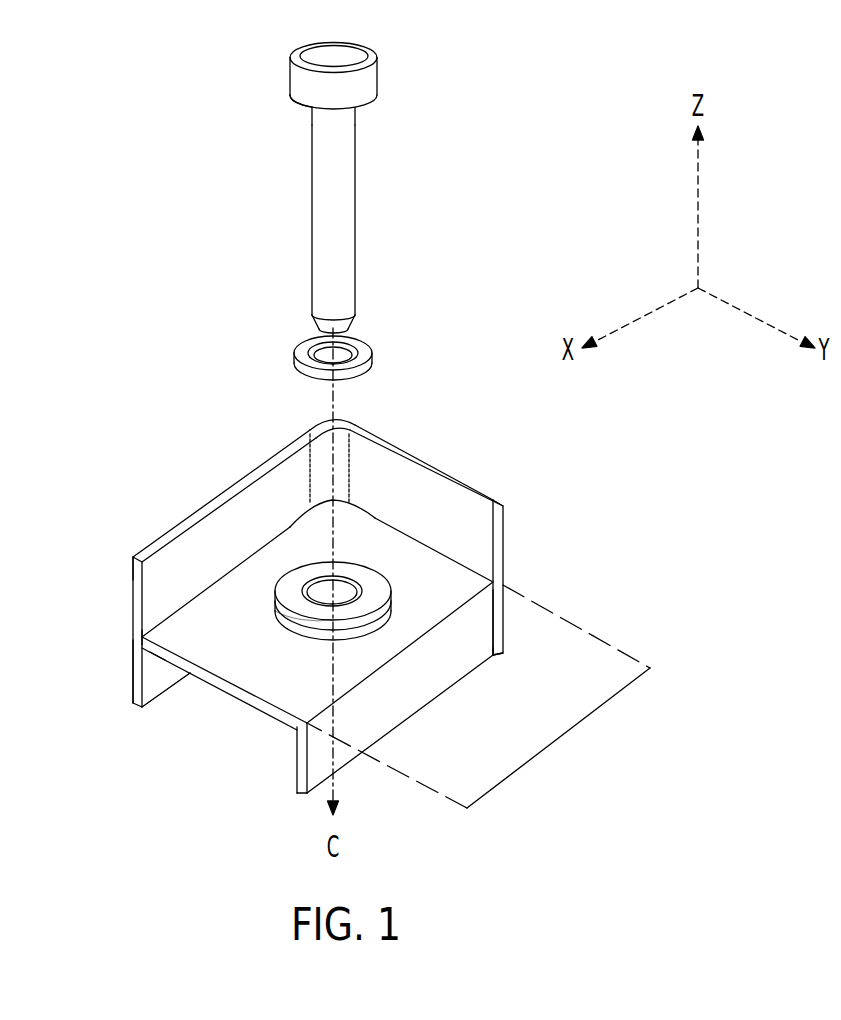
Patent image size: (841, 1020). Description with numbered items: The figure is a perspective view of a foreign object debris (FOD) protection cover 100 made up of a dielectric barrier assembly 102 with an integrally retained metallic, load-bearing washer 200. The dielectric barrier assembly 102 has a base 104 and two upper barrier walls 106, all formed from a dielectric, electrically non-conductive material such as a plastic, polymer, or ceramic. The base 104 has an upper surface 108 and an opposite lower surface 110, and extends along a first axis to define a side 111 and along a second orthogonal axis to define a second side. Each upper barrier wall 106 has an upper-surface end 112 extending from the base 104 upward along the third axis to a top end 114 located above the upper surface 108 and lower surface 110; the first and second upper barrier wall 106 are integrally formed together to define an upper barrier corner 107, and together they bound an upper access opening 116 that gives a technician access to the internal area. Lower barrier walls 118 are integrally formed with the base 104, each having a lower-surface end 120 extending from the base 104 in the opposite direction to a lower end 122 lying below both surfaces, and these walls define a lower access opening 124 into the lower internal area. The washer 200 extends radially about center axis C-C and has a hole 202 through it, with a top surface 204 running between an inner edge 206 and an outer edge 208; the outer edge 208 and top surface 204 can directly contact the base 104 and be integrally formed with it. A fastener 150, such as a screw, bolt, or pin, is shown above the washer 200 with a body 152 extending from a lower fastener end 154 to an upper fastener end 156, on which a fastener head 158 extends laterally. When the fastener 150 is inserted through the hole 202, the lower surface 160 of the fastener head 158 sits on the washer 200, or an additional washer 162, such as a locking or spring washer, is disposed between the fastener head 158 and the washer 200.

The FOD protection cover 100 is at (347, 613).
The dielectric barrier assembly 102 is at (437, 445).
The base 104 is at (257, 725).
The upper barrier wall 106 is at (187, 503).
The upper barrier corner 107 is at (340, 468).
The upper surface 108 is at (392, 648).
The lower surface 110 is at (190, 677).
The side 111 is at (162, 652).
The upper-surface end 112 is at (142, 637).
The top end 114 is at (133, 560).
The upper access opening 116 is at (568, 731).
The lower barrier wall 118 is at (118, 702).
The lower-surface end 120 is at (297, 760).
The lower end 122 is at (303, 795).
The lower access opening 124 is at (222, 737).
The fastener 150 is at (313, 183).
The body 152 is at (357, 198).
The lower fastener end 154 is at (352, 322).
The upper fastener end 156 is at (348, 112).
The fastener head 158 is at (373, 77).
The lower surface 160 is at (300, 107).
The additional washer 162 is at (372, 362).
The washer 200 is at (338, 558).
The hole 202 is at (340, 575).
The top surface 204 is at (292, 590).
The inner edge 206 is at (494, 655).
The outer edge 208 is at (283, 628).